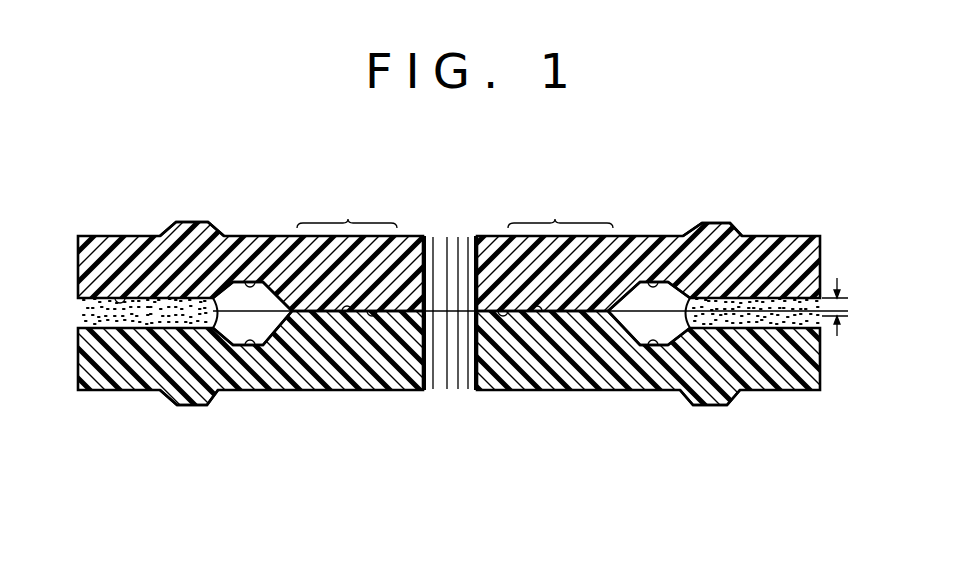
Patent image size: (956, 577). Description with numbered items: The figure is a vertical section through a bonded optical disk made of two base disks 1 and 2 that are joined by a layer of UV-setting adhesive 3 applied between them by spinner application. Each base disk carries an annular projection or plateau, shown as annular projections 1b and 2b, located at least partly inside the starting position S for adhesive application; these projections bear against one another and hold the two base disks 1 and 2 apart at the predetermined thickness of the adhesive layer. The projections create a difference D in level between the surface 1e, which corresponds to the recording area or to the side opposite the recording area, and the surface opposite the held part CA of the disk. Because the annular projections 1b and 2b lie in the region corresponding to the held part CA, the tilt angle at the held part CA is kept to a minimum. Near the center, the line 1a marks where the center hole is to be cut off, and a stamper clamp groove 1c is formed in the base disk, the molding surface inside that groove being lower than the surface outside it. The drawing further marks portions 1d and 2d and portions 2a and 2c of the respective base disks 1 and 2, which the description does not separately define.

The base disk 1 is at (643, 232).
The center hole cutting line 1a is at (445, 290).
The annular projection 1b is at (393, 295).
The stamper clamp groove 1c is at (252, 282).
The upper protruding portion 1d is at (185, 221).
The surface corresponding to recording area 1e is at (120, 293).
The base disk 2 is at (576, 396).
The slit portion of second member 2a is at (470, 352).
The annular projection 2b is at (347, 316).
The cavity portion 2c is at (251, 347).
The lower protruding portion 2d is at (190, 406).
The UV-setting adhesive 3 is at (103, 305).
The starting position for adhesive application S is at (150, 310).
The held part CA is at (455, 205).
The difference in level D is at (837, 288).